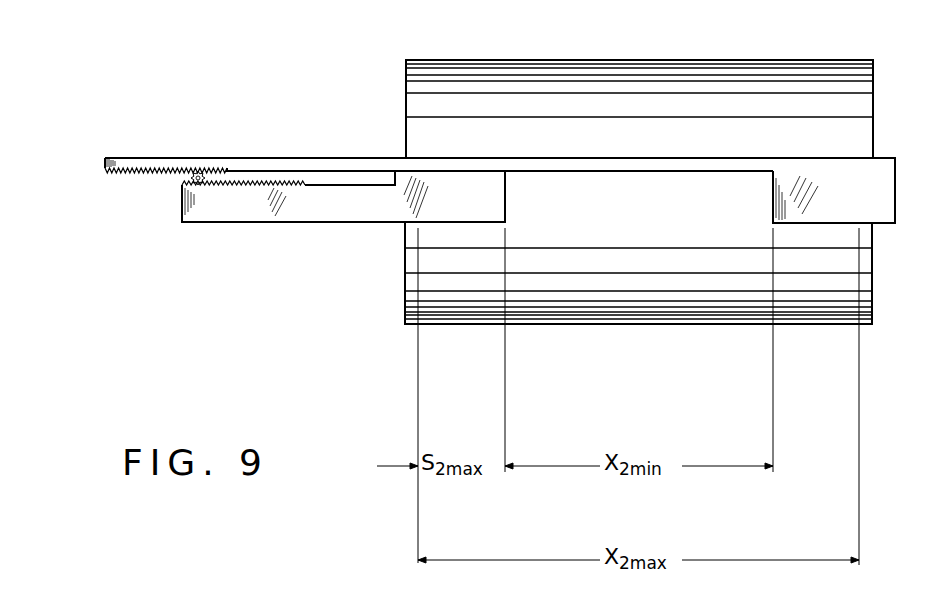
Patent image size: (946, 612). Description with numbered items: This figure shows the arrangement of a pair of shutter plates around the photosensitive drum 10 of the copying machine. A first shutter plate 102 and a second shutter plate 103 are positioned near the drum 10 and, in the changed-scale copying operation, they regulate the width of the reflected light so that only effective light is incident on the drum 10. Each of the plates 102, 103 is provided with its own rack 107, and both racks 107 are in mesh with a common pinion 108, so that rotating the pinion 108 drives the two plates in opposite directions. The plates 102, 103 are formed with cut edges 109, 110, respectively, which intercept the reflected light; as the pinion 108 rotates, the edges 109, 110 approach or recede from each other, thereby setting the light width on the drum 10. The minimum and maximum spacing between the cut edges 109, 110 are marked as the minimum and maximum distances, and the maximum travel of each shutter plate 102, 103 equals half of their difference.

The photosensitive drum 10 is at (843, 60).
The first shutter plate 102 is at (878, 169).
The second shutter plate 103 is at (353, 210).
The rack 107 is at (118, 172).
The pinion 108 is at (188, 177).
The cut edge 109 is at (773, 203).
The cut edge 110 is at (507, 202).